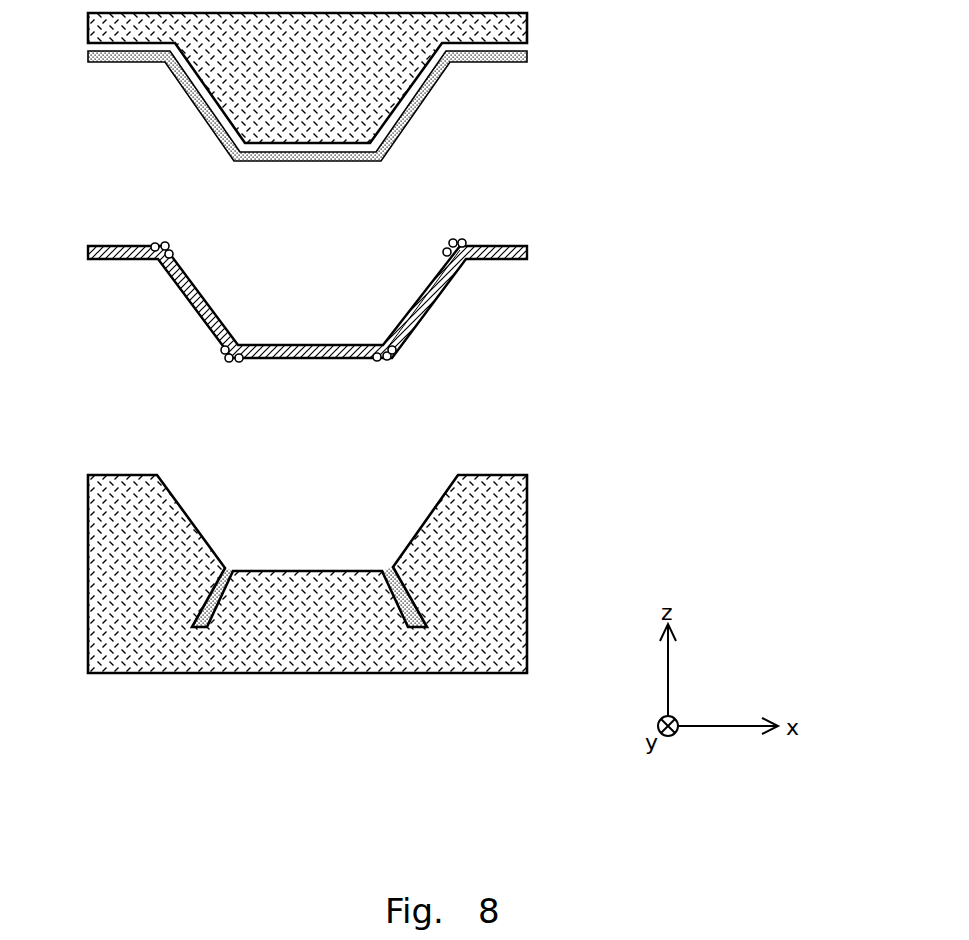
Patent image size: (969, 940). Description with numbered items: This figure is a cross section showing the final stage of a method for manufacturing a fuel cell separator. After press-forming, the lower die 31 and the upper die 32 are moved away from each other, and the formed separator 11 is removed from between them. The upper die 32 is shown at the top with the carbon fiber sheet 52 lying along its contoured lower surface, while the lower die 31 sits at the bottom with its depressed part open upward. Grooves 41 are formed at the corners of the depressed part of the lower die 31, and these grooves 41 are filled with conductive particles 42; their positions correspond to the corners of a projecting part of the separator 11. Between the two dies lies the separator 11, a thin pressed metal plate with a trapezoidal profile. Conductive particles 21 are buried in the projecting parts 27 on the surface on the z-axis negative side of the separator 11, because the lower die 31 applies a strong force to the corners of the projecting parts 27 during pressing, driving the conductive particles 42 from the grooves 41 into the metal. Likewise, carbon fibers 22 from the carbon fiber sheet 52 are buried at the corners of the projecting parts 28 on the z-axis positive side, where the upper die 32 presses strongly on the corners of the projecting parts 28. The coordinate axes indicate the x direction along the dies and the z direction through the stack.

The separator 11 is at (513, 245).
The conductive particles 21 is at (389, 359).
The carbon fibers 22 is at (168, 243).
The projecting parts 27 is at (328, 393).
The projecting parts 28 is at (107, 218).
The lower die 31 is at (515, 512).
The upper die 32 is at (520, 30).
The grooves 41 is at (234, 560).
The conductive particles 42 is at (212, 613).
The carbon fiber sheet 52 is at (522, 63).